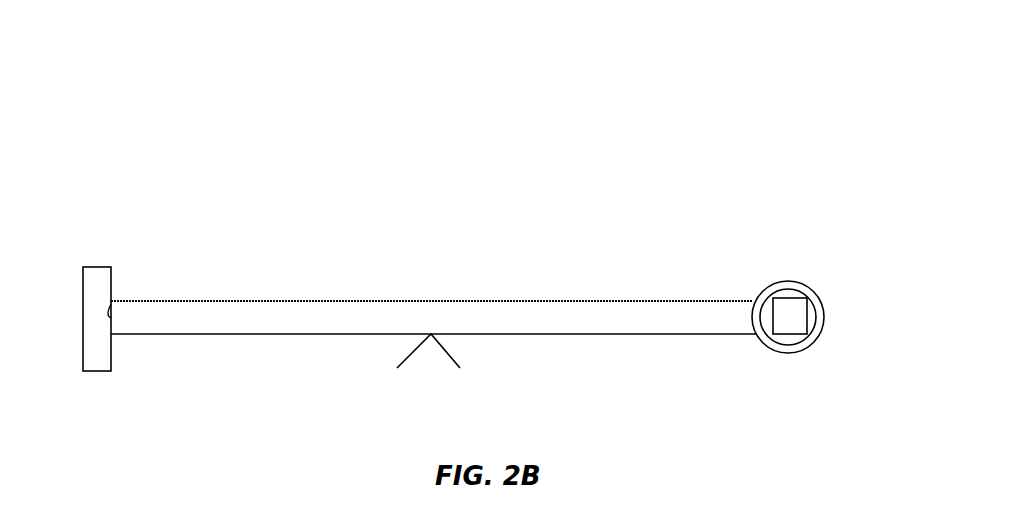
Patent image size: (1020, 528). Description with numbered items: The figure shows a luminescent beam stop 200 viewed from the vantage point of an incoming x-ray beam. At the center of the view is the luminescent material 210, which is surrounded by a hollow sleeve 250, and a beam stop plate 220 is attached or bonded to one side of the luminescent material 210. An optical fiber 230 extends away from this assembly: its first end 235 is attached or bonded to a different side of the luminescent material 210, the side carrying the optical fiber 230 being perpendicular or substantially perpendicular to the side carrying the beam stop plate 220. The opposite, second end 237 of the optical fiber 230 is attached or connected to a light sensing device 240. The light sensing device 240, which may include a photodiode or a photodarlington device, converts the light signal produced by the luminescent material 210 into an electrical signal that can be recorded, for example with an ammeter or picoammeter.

The luminescent beam stop 200 is at (767, 139).
The luminescent material 210 is at (792, 315).
The beam stop plate 220 is at (787, 338).
The optical fiber 230 is at (425, 305).
The first end 235 is at (768, 312).
The second end 237 is at (111, 318).
The light sensing device 240 is at (94, 267).
The hollow sleeve 250 is at (818, 312).